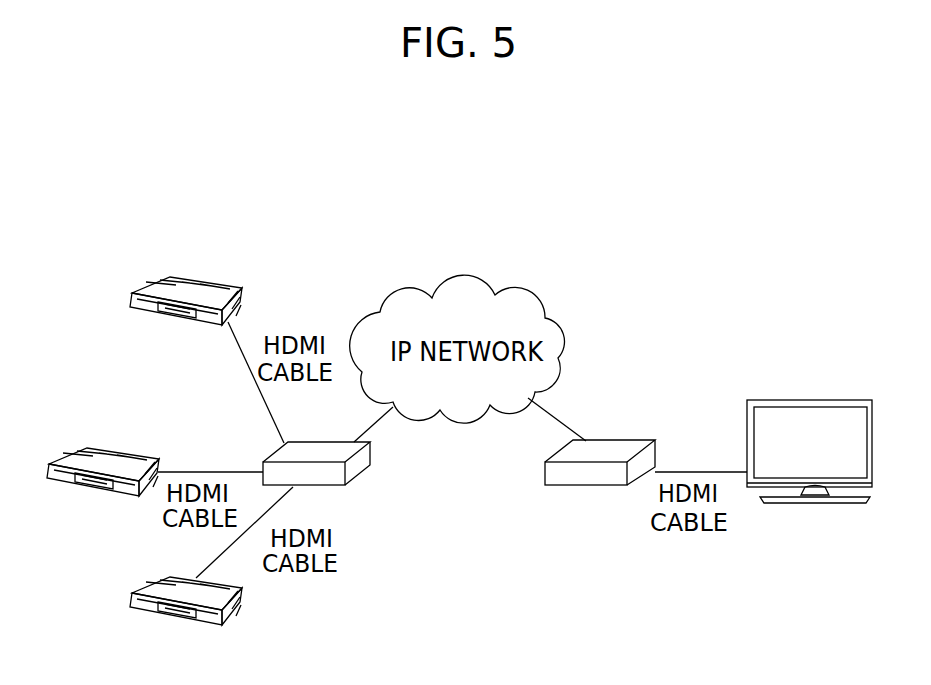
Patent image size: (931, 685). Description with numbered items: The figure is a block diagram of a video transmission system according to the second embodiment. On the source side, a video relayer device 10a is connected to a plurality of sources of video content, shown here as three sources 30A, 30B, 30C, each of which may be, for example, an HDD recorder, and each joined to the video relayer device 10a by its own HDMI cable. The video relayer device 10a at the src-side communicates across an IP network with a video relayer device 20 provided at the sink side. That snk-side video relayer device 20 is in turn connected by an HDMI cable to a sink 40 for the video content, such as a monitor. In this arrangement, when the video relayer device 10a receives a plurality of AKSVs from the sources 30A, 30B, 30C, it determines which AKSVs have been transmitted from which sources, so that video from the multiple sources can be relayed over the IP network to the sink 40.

The source 30A is at (207, 280).
The source 30B is at (146, 455).
The source 30C is at (228, 628).
The video relayer device 10a is at (359, 469).
The video relayer device 20 is at (563, 486).
The sink 40 is at (795, 401).